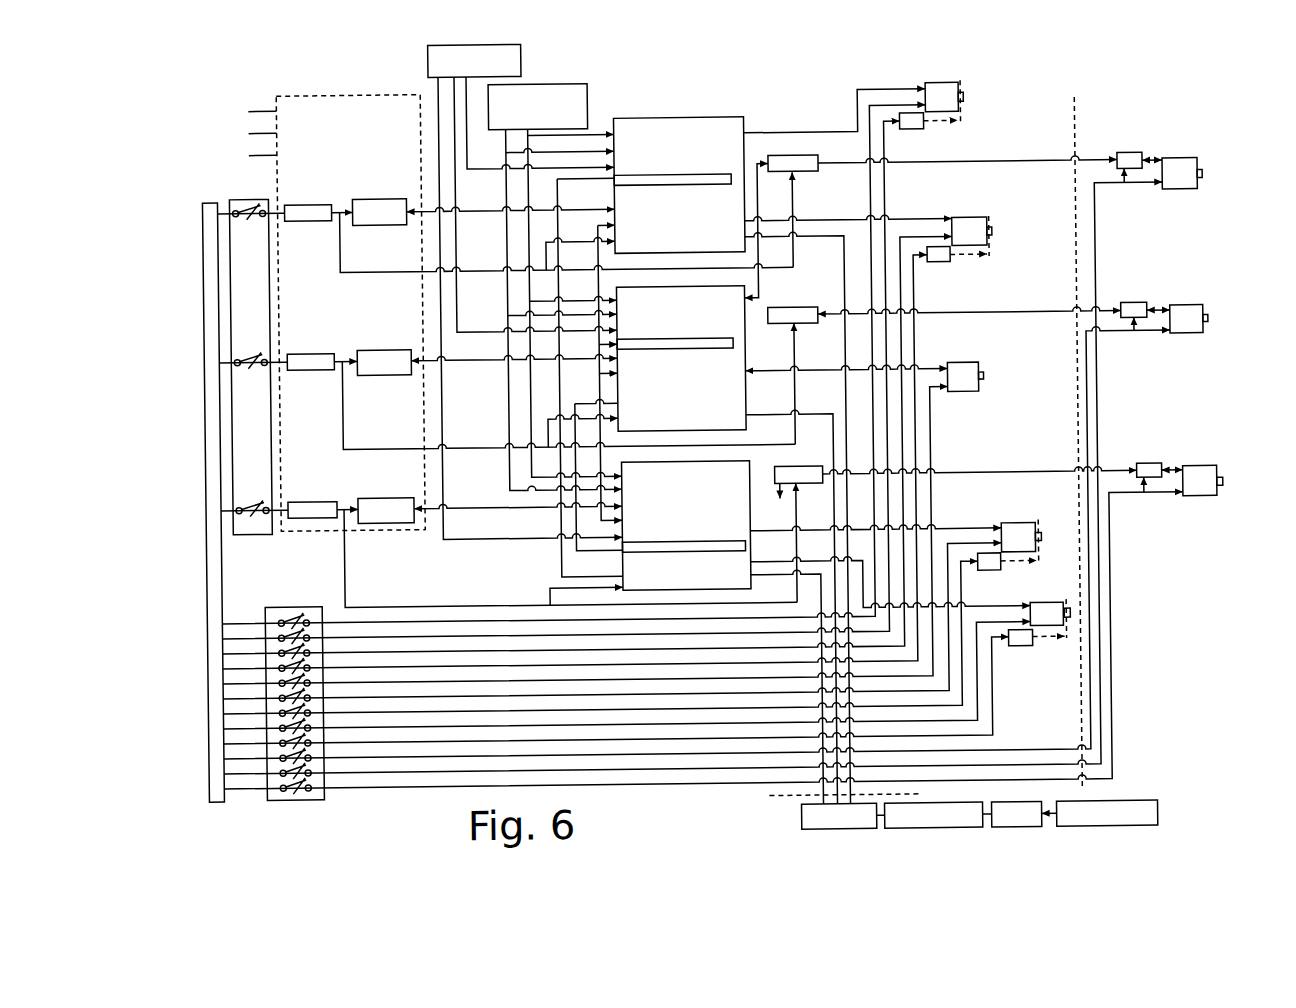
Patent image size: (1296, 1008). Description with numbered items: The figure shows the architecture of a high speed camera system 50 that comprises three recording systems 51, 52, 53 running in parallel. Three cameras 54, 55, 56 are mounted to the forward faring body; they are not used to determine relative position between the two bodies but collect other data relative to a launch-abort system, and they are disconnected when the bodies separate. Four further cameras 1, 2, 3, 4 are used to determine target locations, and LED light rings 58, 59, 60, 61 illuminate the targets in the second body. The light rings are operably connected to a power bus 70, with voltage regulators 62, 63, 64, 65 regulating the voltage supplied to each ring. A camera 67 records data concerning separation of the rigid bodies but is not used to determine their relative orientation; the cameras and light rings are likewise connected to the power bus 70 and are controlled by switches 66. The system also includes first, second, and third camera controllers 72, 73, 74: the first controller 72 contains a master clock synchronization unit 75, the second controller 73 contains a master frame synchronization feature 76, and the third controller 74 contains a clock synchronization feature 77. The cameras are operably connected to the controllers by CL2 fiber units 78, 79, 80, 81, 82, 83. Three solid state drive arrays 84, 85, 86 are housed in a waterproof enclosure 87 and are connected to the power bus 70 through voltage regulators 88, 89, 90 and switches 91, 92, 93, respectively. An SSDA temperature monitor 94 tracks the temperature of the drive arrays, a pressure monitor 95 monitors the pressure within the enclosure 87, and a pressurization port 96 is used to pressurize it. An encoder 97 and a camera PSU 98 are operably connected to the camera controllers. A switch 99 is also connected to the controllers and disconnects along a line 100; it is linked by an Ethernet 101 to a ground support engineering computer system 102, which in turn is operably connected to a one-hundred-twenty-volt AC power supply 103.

The camera 1 is at (928, 88).
The camera 2 is at (962, 220).
The camera 3 is at (1008, 526).
The camera 4 is at (1035, 606).
The high speed camera system 50 is at (1037, 94).
The recording system 51 is at (1193, 136).
The recording system 52 is at (1192, 283).
The recording system 53 is at (1201, 486).
The camera 54 is at (1185, 163).
The camera 55 is at (1192, 310).
The camera 56 is at (1198, 471).
The LED light ring 58 is at (968, 90).
The LED light ring 59 is at (992, 222).
The LED light ring 60 is at (1035, 526).
The LED light ring 61 is at (1064, 632).
The voltage regulator 62 is at (926, 132).
The voltage regulator 63 is at (942, 266).
The voltage regulator 64 is at (1000, 573).
The voltage regulator 65 is at (1018, 651).
The switches 66 is at (297, 797).
The camera 67 is at (963, 365).
The power bus 70 is at (208, 640).
The first camera controller 72 is at (727, 251).
The second camera controller 73 is at (728, 421).
The third camera controller 74 is at (727, 538).
The master clock synchronization unit 75 is at (673, 186).
The master frame synchronization feature 76 is at (681, 350).
The clock synchronization feature 77 is at (672, 541).
The CL2 fiber unit 78 is at (812, 174).
The CL2 fiber unit 79 is at (802, 326).
The CL2 fiber unit 80 is at (814, 486).
The CL2 fiber unit 81 is at (1132, 157).
The CL2 fiber unit 82 is at (1138, 307).
The CL2 fiber unit 83 is at (1148, 472).
The solid state drive array 84 is at (394, 223).
The solid state drive array 85 is at (397, 373).
The solid state drive array 86 is at (375, 494).
The waterproof enclosure 87 is at (284, 92).
The voltage regulator 88 is at (324, 218).
The voltage regulator 89 is at (314, 349).
The voltage regulator 90 is at (326, 515).
The switch 91 is at (246, 218).
The switch 92 is at (250, 366).
The switch 93 is at (250, 514).
The SSDA temperature monitor 94 is at (268, 104).
The pressure monitor 95 is at (270, 132).
The pressurization port 96 is at (266, 153).
The encoder 97 is at (526, 62).
The camera PSU 98 is at (577, 82).
The switch 99 is at (798, 818).
The line 100 is at (766, 800).
The Ethernet 101 is at (912, 832).
The ground support engineering (GSE) computer system 102 is at (1030, 832).
The 120-volt AC power supply 103 is at (1136, 806).